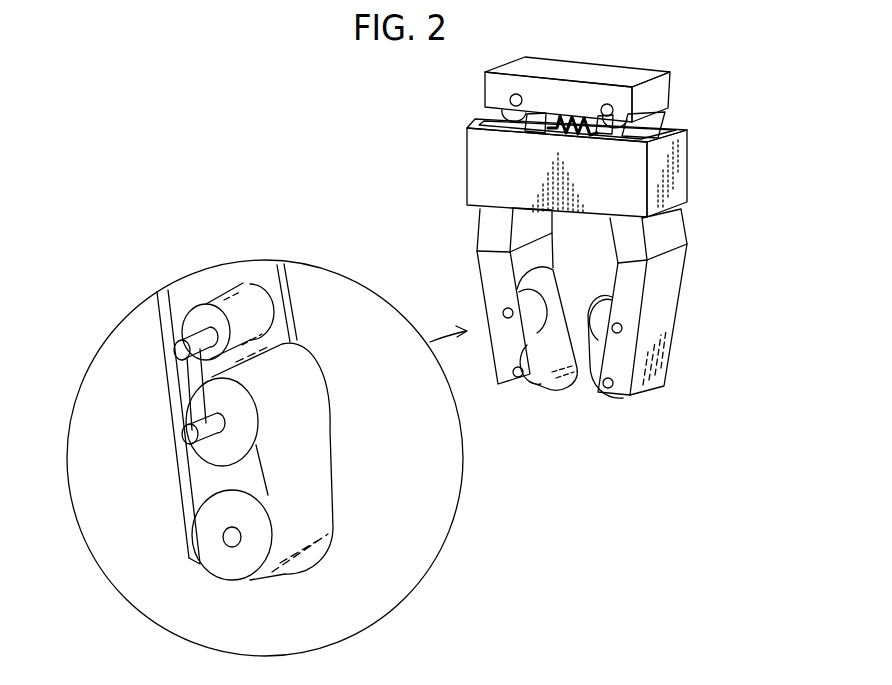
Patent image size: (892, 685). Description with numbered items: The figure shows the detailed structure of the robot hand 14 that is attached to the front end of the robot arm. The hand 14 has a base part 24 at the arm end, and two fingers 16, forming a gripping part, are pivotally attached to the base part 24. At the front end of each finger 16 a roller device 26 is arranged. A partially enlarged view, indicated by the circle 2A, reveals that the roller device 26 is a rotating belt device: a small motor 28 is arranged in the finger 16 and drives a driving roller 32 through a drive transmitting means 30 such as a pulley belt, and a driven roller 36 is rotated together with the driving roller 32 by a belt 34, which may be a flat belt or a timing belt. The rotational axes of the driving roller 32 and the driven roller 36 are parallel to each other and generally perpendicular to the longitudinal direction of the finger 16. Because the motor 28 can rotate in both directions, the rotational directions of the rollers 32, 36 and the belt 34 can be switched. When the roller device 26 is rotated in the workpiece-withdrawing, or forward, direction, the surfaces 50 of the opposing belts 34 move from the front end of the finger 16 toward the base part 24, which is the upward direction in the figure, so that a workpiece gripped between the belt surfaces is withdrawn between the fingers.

The hand 14 is at (414, 162).
The base part 24 is at (655, 95).
The finger 16 is at (488, 284).
The surface of belt 50 is at (560, 325).
The roller device 26 is at (548, 410).
The circle 2A is at (463, 497).
The small motor 28 is at (249, 290).
The arm / support shaft 30 is at (180, 382).
The driving roller 32 is at (214, 463).
The belt 34 is at (307, 428).
The driven roller 36 is at (228, 562).